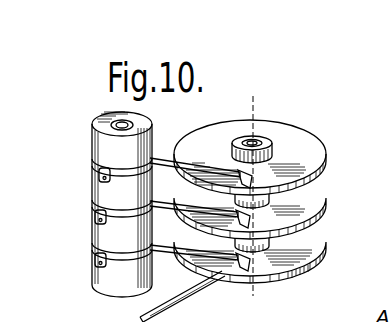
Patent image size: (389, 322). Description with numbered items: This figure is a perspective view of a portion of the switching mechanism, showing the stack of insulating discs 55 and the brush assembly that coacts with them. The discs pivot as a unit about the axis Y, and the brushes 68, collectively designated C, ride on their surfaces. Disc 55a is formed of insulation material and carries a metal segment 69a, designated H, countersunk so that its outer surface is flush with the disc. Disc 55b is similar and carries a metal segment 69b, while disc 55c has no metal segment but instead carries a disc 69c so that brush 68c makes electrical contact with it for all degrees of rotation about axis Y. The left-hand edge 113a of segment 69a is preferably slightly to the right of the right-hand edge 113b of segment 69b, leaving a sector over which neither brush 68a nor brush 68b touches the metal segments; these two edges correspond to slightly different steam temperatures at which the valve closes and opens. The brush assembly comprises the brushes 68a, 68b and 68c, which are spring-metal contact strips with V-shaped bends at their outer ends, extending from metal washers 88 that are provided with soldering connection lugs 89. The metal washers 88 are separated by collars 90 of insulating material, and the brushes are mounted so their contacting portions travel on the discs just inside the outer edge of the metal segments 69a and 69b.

The metal washers 88 is at (94, 155).
The collars of insulating material 90 is at (92, 133).
The soldering connection lugs 89 is at (99, 172).
The insulating discs 55 is at (333, 164).
The disc 55a is at (312, 139).
The disc 55b is at (312, 189).
The disc 55c is at (311, 266).
The left-hand edge of segment 69a 113a is at (232, 165).
The right-hand edge of segment 69b 113b is at (309, 204).
The brushes 68 is at (206, 163).
The brush 68a is at (163, 158).
The brush 68b is at (164, 202).
The brush 68c is at (164, 246).
The metal segment 69a is at (281, 176).
The metal segment 69b is at (264, 216).
The disc 69c is at (309, 243).
The contact segment H is at (303, 169).
The brush C is at (311, 250).
The axis Y- Y is at (253, 200).